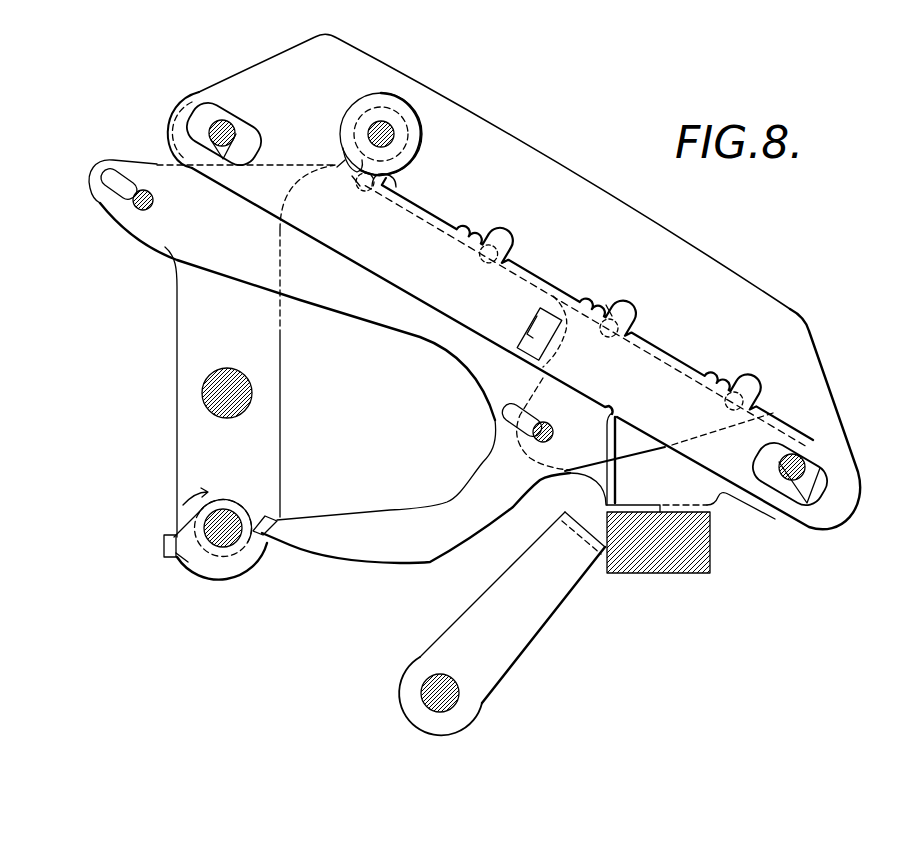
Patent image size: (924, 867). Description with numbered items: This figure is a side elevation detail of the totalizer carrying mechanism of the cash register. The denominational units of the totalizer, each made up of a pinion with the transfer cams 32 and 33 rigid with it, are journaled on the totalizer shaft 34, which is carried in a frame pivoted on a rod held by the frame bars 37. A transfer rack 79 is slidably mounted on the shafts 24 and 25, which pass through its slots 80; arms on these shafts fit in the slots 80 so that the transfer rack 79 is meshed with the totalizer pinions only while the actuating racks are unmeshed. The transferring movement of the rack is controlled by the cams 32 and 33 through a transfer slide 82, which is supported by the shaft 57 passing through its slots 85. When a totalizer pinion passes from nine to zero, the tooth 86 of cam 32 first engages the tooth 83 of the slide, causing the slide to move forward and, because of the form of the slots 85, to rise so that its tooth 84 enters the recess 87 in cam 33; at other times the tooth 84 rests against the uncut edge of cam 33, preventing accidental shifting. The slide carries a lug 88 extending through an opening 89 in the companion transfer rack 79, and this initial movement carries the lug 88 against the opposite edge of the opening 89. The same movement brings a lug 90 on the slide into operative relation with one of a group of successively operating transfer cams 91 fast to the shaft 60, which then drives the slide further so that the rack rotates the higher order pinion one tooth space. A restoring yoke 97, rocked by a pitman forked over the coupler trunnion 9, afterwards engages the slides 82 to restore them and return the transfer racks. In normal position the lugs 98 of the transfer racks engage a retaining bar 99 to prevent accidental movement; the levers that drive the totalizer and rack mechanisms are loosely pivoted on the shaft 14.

The coupler trunnion 9 is at (455, 695).
The shaft 14 is at (243, 395).
The shaft 24 is at (210, 127).
The shaft 25 is at (807, 468).
The transfer cam 32 is at (408, 138).
The transfer cam 33 is at (352, 105).
The totalizer shaft 34 is at (387, 122).
The frame bar 37 is at (688, 243).
The shaft 57 is at (134, 203).
The shaft 60 is at (222, 546).
The transfer rack 79 is at (460, 229).
The slot 80 is at (195, 160).
The transfer slide 82 is at (422, 337).
The tooth 83 is at (400, 178).
The tooth 84 is at (358, 188).
The slot 85 is at (103, 180).
The tooth 86 is at (343, 150).
The recess 87 is at (337, 167).
The lug 88 is at (531, 323).
The opening 89 is at (549, 342).
The lug 90 is at (268, 514).
The transfer cam 91 is at (164, 543).
The restoring yoke 97 is at (552, 606).
The lug 98 is at (611, 420).
The retaining bar 99 is at (618, 477).